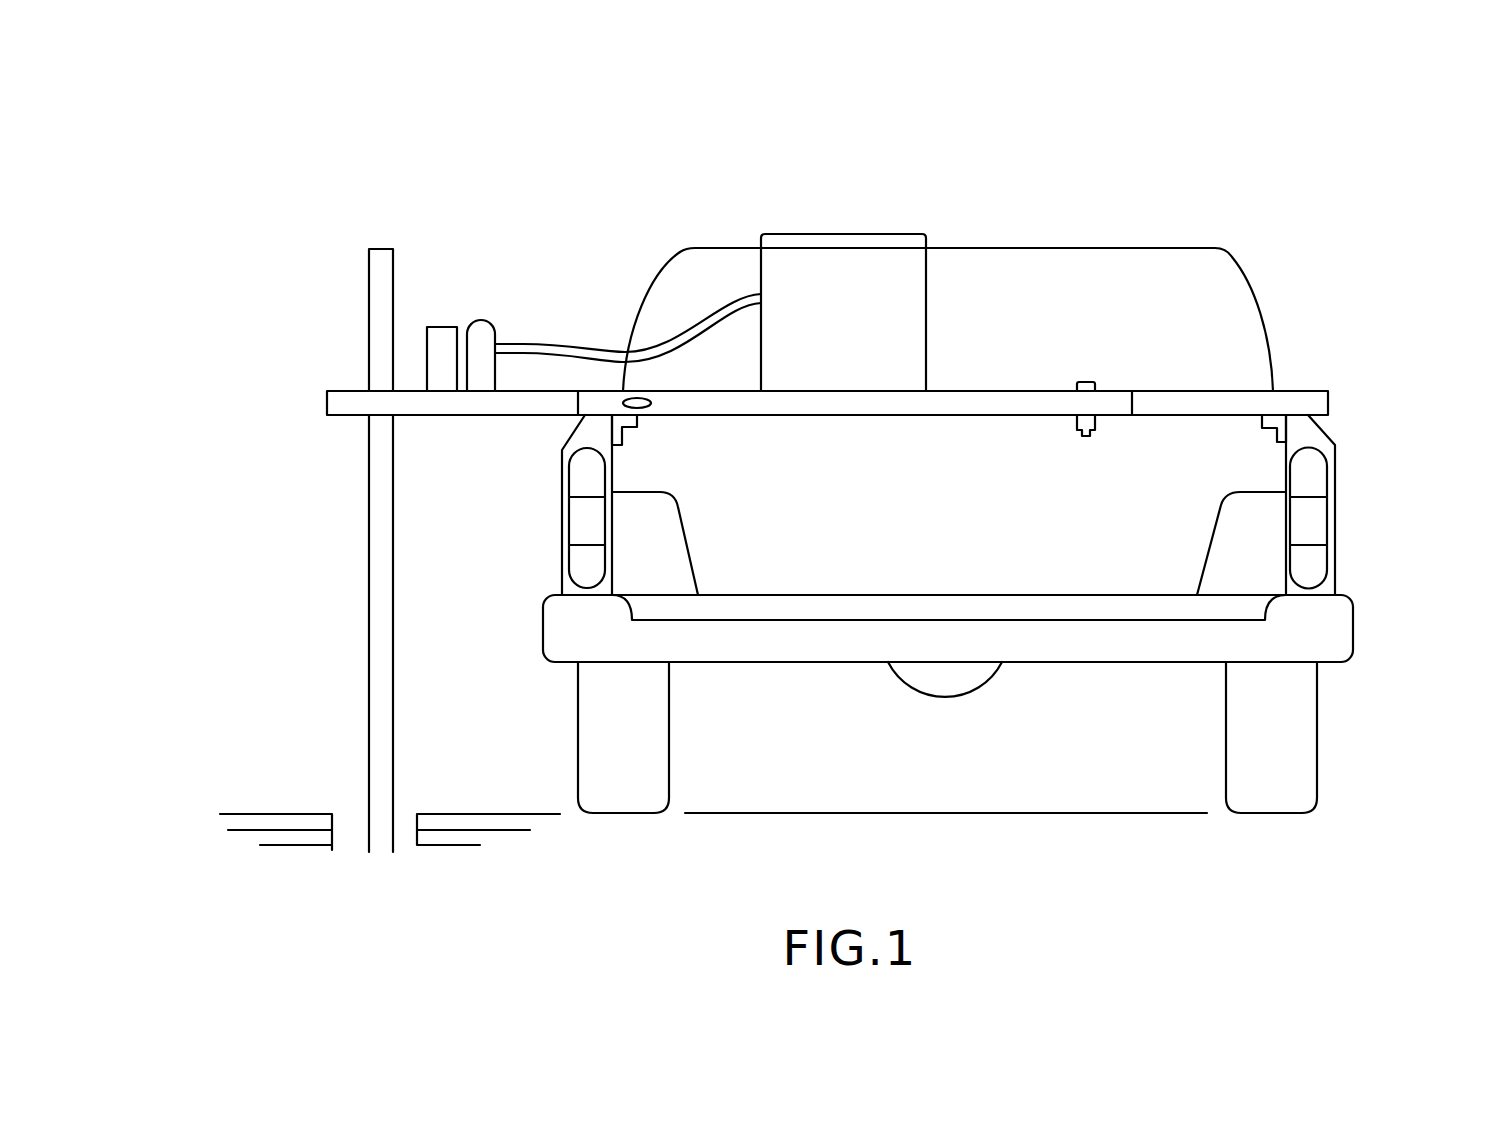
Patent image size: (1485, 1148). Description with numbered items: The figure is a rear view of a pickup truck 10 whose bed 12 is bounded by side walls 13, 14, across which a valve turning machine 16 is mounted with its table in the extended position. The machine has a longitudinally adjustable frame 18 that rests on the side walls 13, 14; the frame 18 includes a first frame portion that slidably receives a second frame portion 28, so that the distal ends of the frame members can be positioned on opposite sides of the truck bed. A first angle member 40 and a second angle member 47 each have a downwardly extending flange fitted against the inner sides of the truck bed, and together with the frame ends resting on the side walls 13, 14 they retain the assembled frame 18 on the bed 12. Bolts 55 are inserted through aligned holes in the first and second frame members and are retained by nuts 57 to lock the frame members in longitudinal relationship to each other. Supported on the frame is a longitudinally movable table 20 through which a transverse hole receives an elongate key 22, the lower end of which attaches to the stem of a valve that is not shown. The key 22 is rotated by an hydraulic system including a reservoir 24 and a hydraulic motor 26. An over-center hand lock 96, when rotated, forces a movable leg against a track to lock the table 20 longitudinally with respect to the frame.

The truck 10 is at (1233, 260).
The bed 12 is at (981, 614).
The side wall 13 is at (562, 448).
The side wall 14 is at (1327, 438).
The valve turning machine 16 is at (793, 233).
The longitudinally adjustable frame 18 is at (1029, 390).
The longitudinally movable table 20 is at (342, 390).
The elongate key 22 is at (370, 303).
The reservoir 24 is at (882, 235).
The hydraulic motor 26 is at (442, 327).
The second frame portion 28 is at (1208, 390).
The first angle member 40 is at (757, 640).
The second angle member 47 is at (1329, 443).
The bolt 55 is at (1086, 380).
The nut 57 is at (1064, 657).
The over-center hand lock 96 is at (810, 648).